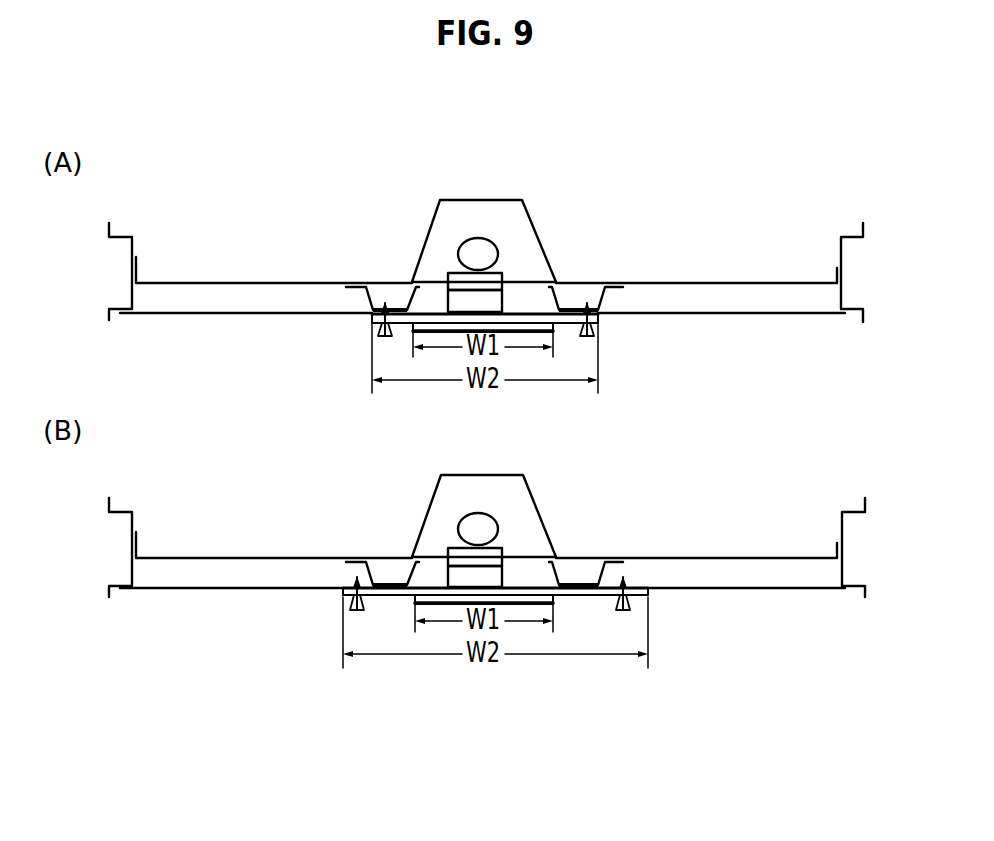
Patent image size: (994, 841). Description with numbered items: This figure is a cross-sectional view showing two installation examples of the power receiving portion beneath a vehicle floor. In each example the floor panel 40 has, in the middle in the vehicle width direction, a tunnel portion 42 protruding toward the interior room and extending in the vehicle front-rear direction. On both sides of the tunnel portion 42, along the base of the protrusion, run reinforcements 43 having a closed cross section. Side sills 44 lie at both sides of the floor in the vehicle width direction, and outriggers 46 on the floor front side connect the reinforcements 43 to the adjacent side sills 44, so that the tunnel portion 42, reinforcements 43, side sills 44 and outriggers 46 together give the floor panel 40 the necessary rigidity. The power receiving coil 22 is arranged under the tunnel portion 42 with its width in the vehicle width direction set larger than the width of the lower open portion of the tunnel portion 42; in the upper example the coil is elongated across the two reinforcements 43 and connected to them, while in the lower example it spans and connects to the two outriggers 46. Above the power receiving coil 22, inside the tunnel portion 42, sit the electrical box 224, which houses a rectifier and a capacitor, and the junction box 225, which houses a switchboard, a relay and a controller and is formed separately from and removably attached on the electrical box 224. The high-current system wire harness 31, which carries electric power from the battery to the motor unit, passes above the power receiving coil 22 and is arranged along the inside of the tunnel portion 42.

The power receiving coil 22 is at (521, 330).
The high-current system wire harness 31 is at (499, 256).
The floor panel 40 is at (294, 273).
The tunnel portion 42 is at (535, 216).
The reinforcements 43 is at (366, 289).
The side sills 44 is at (122, 237).
The outriggers 46 is at (233, 313).
The electrical box 224 is at (503, 300).
The junction box 225 is at (448, 287).